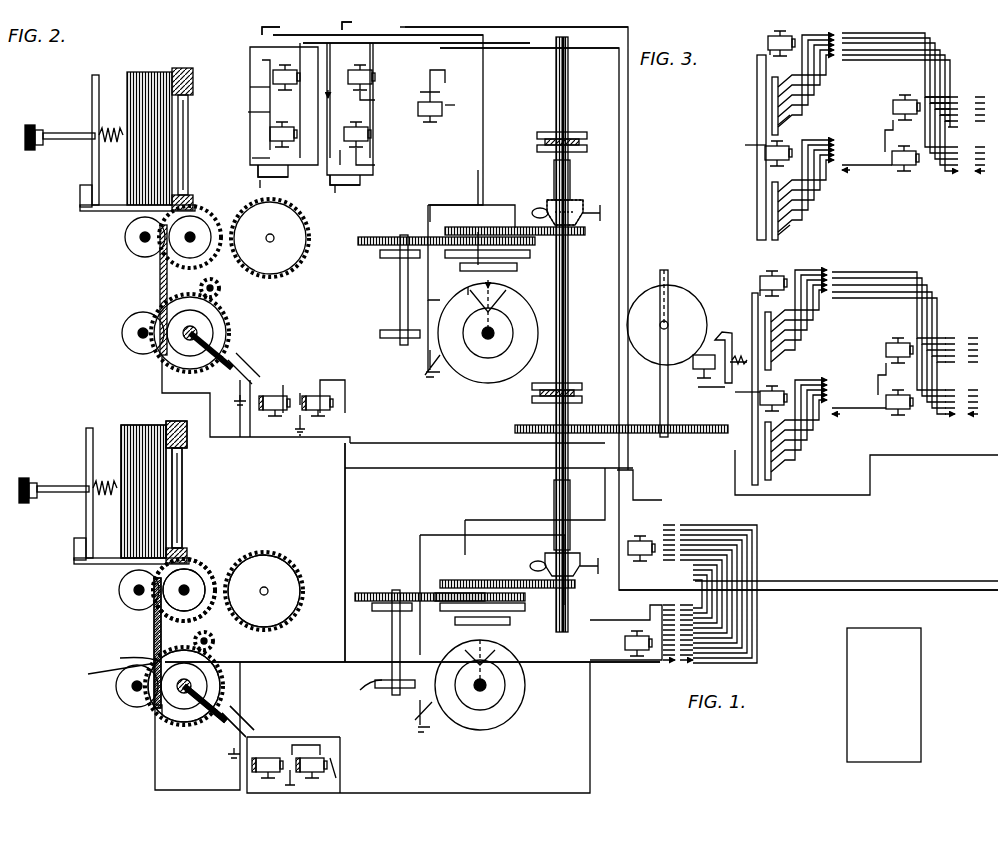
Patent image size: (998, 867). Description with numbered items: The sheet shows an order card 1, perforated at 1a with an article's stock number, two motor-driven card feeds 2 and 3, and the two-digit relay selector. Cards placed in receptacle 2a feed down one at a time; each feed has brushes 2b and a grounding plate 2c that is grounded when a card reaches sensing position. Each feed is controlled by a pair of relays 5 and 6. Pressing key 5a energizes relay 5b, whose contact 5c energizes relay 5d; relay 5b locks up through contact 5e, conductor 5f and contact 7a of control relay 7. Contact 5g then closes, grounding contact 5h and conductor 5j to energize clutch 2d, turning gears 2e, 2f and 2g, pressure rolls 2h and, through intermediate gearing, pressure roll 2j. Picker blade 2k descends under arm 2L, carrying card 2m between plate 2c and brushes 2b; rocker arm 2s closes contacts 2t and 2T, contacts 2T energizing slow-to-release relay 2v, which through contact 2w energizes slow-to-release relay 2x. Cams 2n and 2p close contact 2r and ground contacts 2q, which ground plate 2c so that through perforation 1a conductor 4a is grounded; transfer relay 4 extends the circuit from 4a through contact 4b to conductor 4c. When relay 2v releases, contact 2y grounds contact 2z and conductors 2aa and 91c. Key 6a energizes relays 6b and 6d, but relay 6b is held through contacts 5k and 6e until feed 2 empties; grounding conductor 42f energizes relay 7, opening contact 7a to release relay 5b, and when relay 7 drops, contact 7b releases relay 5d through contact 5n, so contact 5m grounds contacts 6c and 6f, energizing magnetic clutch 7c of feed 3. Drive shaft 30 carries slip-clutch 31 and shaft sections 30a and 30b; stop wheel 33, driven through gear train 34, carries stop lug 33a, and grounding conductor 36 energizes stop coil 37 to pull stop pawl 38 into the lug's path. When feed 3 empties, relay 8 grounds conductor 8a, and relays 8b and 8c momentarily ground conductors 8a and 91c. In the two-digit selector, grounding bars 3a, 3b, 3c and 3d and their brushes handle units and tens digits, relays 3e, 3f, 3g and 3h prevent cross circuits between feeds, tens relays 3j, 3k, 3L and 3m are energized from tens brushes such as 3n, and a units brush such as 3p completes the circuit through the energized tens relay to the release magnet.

In FIG. 2, the order card 1 is at (109, 676).
In FIG. 1, the order card 1 is at (846, 642).
In FIG. 1, the perforation 1a is at (855, 730).
In FIG. 2, the card feed 2 is at (70, 435).
In FIG. 2, the card-feed receptacle 2a is at (140, 425).
In FIG. 2, the picker blade 2k is at (168, 422).
In FIG. 2, the arm 2L is at (184, 445).
In FIG. 2, the pressure rolls 2h is at (192, 570).
In FIG. 2, the gear 2g is at (210, 580).
In FIG. 2, the gear 2f is at (295, 570).
In FIG. 2, the grounding plate 2c is at (154, 634).
In FIG. 2, the brushes 2b is at (125, 657).
In FIG. 2, the card-feed pressure roll 2j is at (210, 672).
In FIG. 2, the card 2m is at (158, 718).
In FIG. 2, the rocker arm 2s is at (200, 722).
In FIG. 2, the contacts 2T is at (226, 730).
In FIG. 2, the contacts 2t is at (248, 712).
In FIG. 2, the slow-to-release relay 2v is at (275, 755).
In FIG. 2, the contact 2w is at (312, 755).
In FIG. 2, the contact 2y is at (322, 735).
In FIG. 2, the contact 2z is at (328, 752).
In FIG. 2, the slow-to-release relay 2x is at (338, 776).
In FIG. 2, the conductor 2aa is at (345, 515).
In FIG. 2, the gear 2e is at (490, 590).
In FIG. 2, the motor-driven clutch 2d is at (578, 563).
In FIG. 2, the cam 2n is at (525, 607).
In FIG. 2, the cam 2p is at (455, 640).
In FIG. 2, the contact 2r is at (494, 640).
In FIG. 2, the contacts 2q is at (417, 712).
In FIG. 2, the card feed 3 is at (82, 93).
In FIG. 2, the transfer relay 4 is at (625, 640).
In FIG. 2, the conductor 4a is at (660, 668).
In FIG. 2, the contact 4b is at (695, 658).
In FIG. 2, the conductor 4c is at (870, 577).
In FIG. 2, the relay 5 is at (351, 21).
In FIG. 2, the key 5a is at (348, 178).
In FIG. 2, the relay 5b is at (375, 165).
In FIG. 2, the contact 5c is at (372, 133).
In FIG. 2, the relay 5d is at (375, 100).
In FIG. 2, the contact 5e is at (345, 161).
In FIG. 2, the conductor 5f is at (483, 58).
In FIG. 2, the contact 5g is at (330, 43).
In FIG. 2, the contact 5h is at (370, 43).
In FIG. 2, the conductor 5j is at (612, 278).
In FIG. 2, the contact 5k is at (300, 43).
In FIG. 2, the contact 5m is at (273, 35).
In FIG. 2, the contact 5n is at (375, 72).
In FIG. 2, the relay 6 is at (277, 23).
In FIG. 2, the key 6a is at (280, 175).
In FIG. 2, the relay 6b is at (252, 158).
In FIG. 2, the contact 6c is at (268, 134).
In FIG. 2, the relay 6d is at (250, 87).
In FIG. 2, the contact 6e is at (248, 112).
In FIG. 2, the contact 6f is at (272, 60).
In FIG. 2, the control relay 7 is at (440, 116).
In FIG. 2, the contact 7a is at (445, 83).
In FIG. 2, the contact 7b is at (455, 105).
In FIG. 2, the magnetic clutch 7c is at (548, 200).
In FIG. 2, the relay 8 is at (338, 408).
In FIG. 2, the conductor 8a is at (350, 450).
In FIG. 2, the relay 8b is at (278, 392).
In FIG. 2, the relay 8c is at (320, 392).
In FIG. 2, the card feed drive shaft 30 is at (568, 110).
In FIG. 2, the feed drive shaft section 30a is at (556, 490).
In FIG. 2, the feed drive shaft section 30b is at (568, 185).
In FIG. 2, the slip-clutch 31 is at (580, 130).
In FIG. 2, the stop wheel 33 is at (655, 300).
In FIG. 2, the stop lug 33a is at (669, 328).
In FIG. 2, the gear train 34 is at (630, 420).
In FIG. 2, the conductor 36 is at (735, 478).
In FIG. 2, the stop coil 37 is at (694, 368).
In FIG. 2, the stop pawl 38 is at (722, 333).
In FIG. 2, the conductor 42f is at (590, 30).
In FIG. 2, the conductor 91c is at (880, 508).
In FIG. 3, the grounding bar 3a is at (772, 103).
In FIG. 3, the grounding bar 3b is at (772, 207).
In FIG. 3, the grounding bar 3c is at (765, 332).
In FIG. 3, the grounding bar 3d is at (765, 453).
In FIG. 3, the relay 3e is at (768, 40).
In FIG. 3, the relay 3f is at (765, 155).
In FIG. 3, the relay 3g is at (760, 294).
In FIG. 3, the relay 3h is at (760, 400).
In FIG. 3, the tens relay 3j is at (893, 107).
In FIG. 3, the tens relay 3k is at (904, 171).
In FIG. 3, the tens relay 3L is at (886, 350).
In FIG. 3, the tens relay 3m is at (902, 415).
In FIG. 3, the tens brush 3n is at (790, 228).
In FIG. 3, the units brush 3p is at (786, 115).